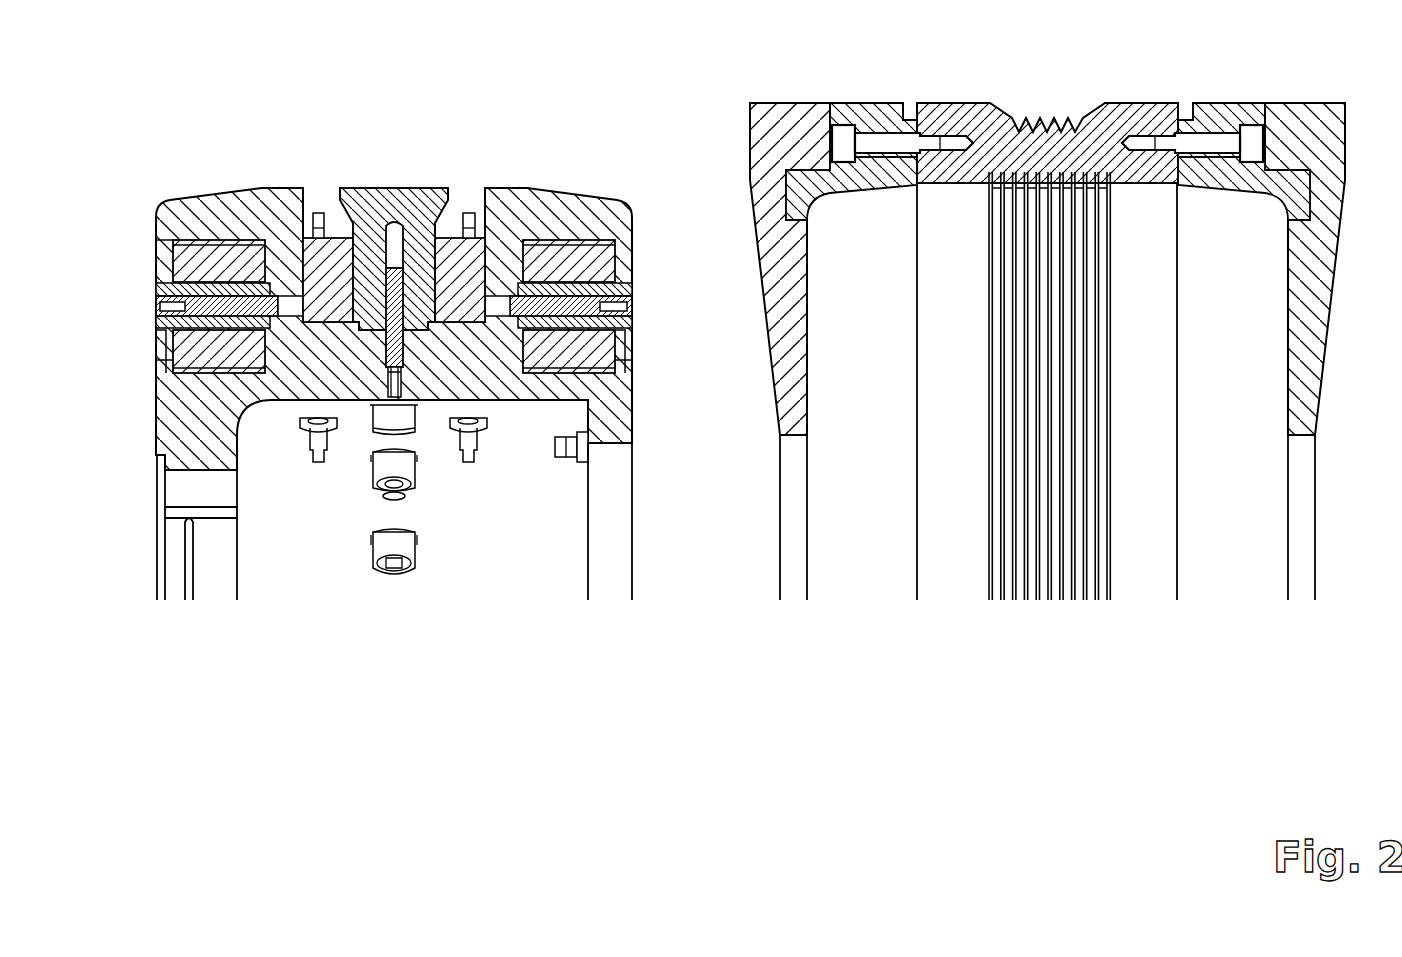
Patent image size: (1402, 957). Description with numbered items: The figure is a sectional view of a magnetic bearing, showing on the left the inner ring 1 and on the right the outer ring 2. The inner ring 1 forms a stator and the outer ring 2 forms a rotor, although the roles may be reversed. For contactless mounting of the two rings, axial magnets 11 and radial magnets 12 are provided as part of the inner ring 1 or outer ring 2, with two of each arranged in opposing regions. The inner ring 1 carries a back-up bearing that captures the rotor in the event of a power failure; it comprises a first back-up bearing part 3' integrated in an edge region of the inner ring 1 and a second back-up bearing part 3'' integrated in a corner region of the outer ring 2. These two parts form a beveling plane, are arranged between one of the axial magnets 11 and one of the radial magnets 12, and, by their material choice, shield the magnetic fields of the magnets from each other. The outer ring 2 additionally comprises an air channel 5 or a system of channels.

The inner ring 1 is at (398, 431).
The outer ring 2 is at (1047, 410).
The first back-up bearing part 3' is at (394, 298).
The second back-up bearing part 3'' is at (1047, 97).
The air channel 5 is at (808, 322).
The axial magnet 11 is at (182, 259).
The radial magnet 12 is at (395, 196).